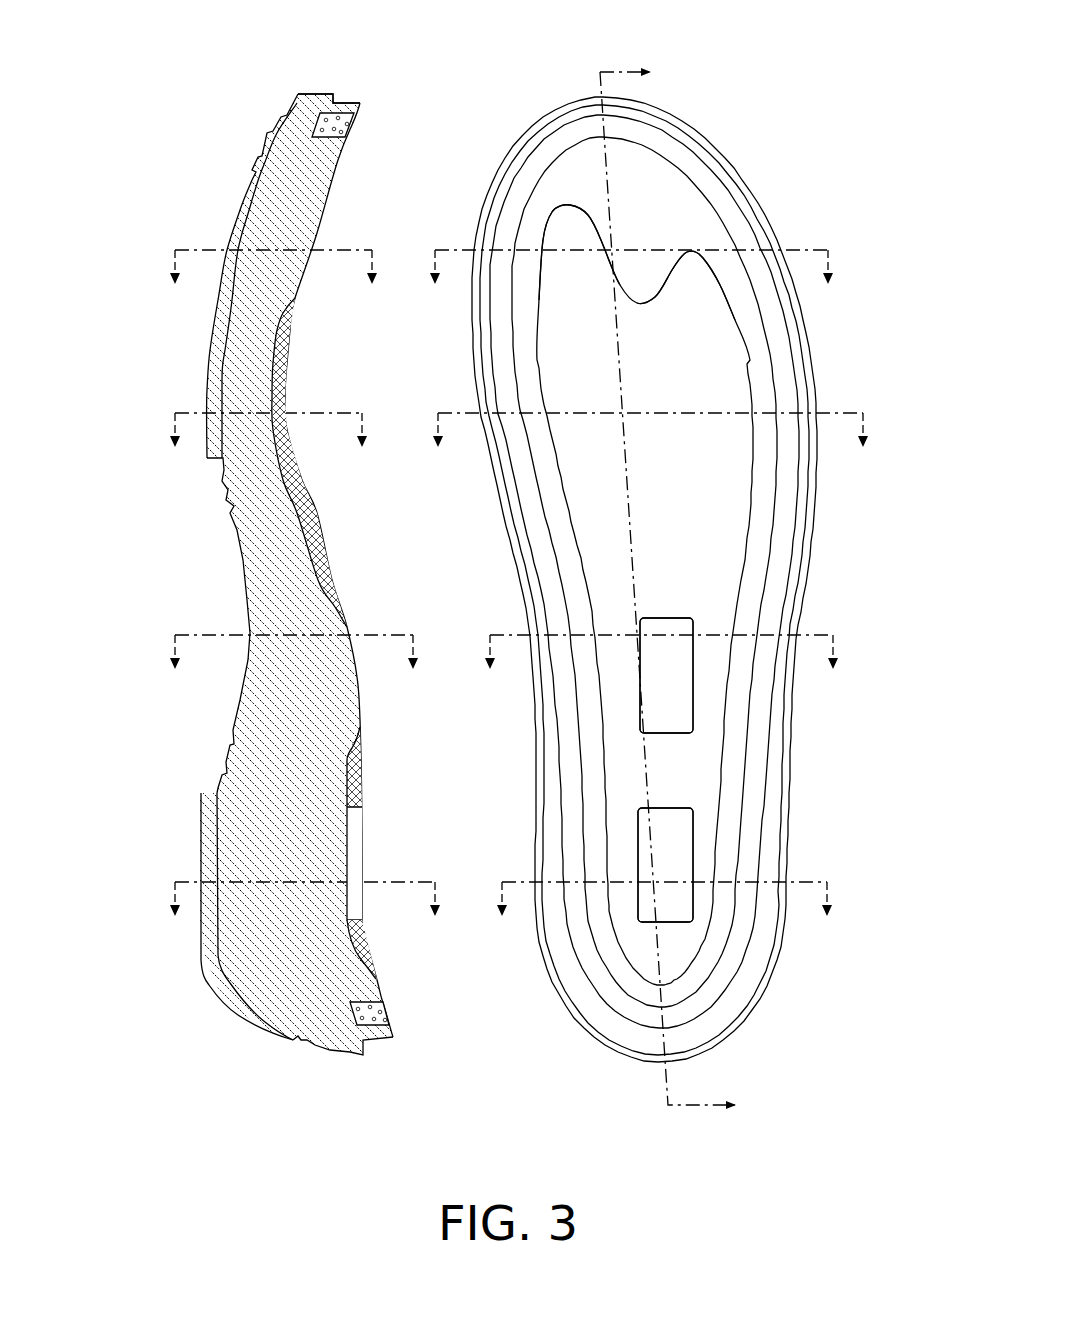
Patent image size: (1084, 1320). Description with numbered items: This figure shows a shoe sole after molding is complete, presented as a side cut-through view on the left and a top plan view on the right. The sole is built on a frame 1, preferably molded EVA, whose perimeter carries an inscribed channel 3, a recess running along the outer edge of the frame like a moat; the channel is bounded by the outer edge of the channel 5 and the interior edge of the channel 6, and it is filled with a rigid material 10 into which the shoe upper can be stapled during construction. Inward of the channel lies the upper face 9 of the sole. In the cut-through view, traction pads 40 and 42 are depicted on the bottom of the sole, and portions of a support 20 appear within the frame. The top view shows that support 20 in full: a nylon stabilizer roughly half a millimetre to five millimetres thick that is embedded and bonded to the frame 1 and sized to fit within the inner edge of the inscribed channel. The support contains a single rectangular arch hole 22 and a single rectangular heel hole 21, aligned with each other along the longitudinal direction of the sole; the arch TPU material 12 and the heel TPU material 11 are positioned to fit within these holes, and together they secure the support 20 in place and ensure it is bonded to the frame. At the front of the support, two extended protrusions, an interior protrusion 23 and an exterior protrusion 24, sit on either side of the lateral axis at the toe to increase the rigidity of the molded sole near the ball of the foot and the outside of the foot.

The frame 1 is at (283, 762).
The channel 3 is at (322, 108).
The outer edge of the channel 5 is at (764, 242).
The interior edge of the channel 6 is at (710, 196).
The upper face 9 is at (638, 200).
The rigid material 10 is at (343, 122).
The heel TPU material 11 is at (680, 908).
The arch TPU material 12 is at (680, 707).
The support 20 is at (320, 578).
The single rectangular heel hole 21 is at (680, 850).
The single rectangular arch hole 22 is at (680, 648).
The interior protrusion 23 is at (568, 234).
The exterior protrusion 24 is at (692, 292).
The traction pad 40 is at (230, 248).
The traction pad 42 is at (207, 957).